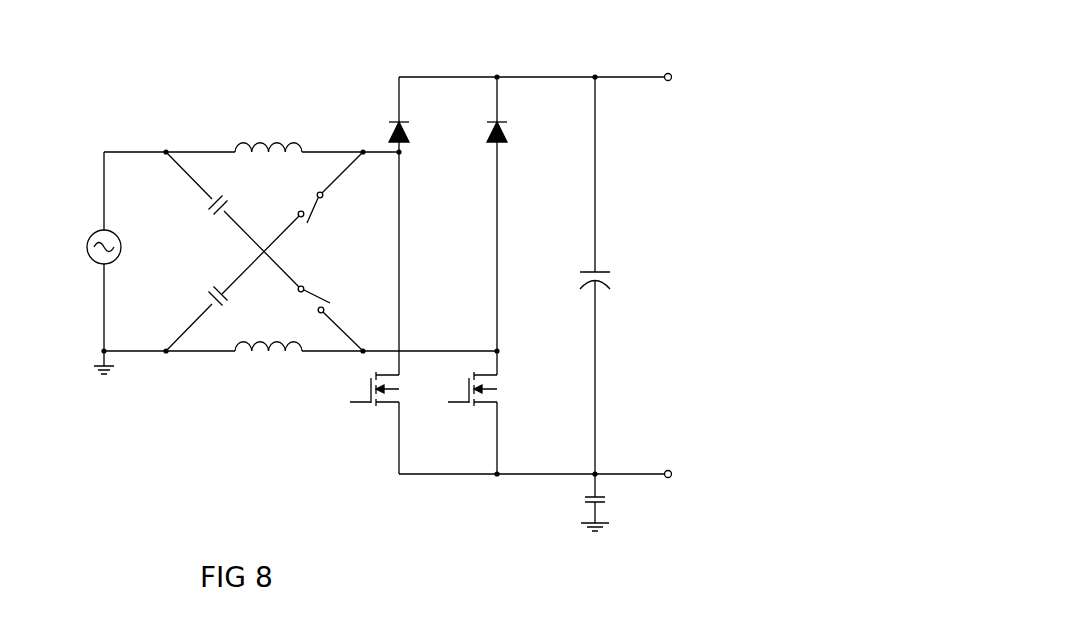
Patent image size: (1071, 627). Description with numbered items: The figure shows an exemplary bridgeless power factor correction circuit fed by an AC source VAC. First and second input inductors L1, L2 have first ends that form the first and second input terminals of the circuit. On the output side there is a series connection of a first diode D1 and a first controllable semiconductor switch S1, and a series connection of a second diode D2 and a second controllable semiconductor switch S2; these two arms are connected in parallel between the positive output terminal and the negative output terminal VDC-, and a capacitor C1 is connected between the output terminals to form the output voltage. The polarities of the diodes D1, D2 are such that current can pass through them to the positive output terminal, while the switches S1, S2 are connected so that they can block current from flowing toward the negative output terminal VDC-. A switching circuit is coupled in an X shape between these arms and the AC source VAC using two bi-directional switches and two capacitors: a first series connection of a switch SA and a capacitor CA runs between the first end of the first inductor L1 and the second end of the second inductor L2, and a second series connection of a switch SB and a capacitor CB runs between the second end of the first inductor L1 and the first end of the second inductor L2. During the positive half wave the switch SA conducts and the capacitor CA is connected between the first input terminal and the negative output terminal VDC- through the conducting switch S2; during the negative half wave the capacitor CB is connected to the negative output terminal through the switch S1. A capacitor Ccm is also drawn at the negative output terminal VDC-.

The AC source VAC is at (86, 247).
The first input inductor L1 is at (268, 137).
The second input inductor L2 is at (268, 362).
The capacitor CA is at (208, 215).
The capacitor CB is at (208, 289).
The switch SA is at (317, 292).
The switch SB is at (317, 214).
The first diode D1 is at (413, 132).
The second diode D2 is at (511, 132).
The first controllable semiconductor switch S1 is at (371, 389).
The second controllable semiconductor switch S2 is at (469, 389).
The capacitor C1 is at (579, 275).
The common-mode capacitor Ccm is at (611, 502).
The negative output terminal VDC- is at (703, 475).